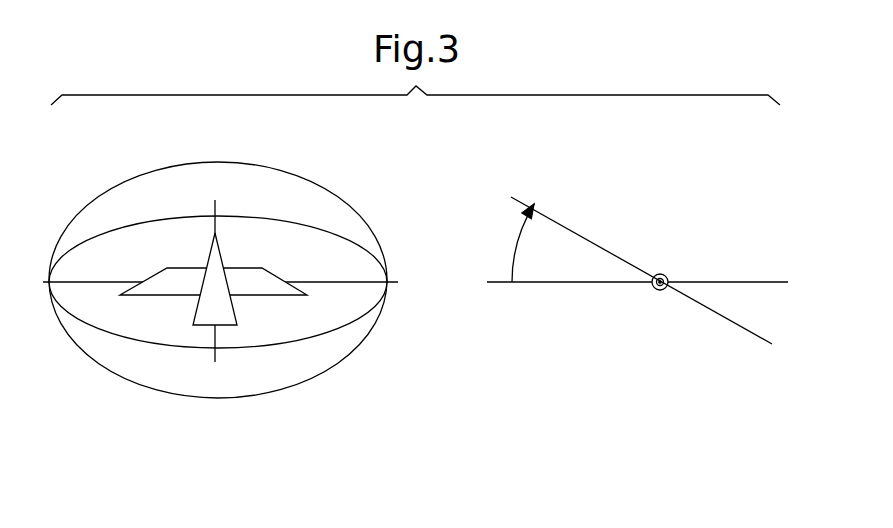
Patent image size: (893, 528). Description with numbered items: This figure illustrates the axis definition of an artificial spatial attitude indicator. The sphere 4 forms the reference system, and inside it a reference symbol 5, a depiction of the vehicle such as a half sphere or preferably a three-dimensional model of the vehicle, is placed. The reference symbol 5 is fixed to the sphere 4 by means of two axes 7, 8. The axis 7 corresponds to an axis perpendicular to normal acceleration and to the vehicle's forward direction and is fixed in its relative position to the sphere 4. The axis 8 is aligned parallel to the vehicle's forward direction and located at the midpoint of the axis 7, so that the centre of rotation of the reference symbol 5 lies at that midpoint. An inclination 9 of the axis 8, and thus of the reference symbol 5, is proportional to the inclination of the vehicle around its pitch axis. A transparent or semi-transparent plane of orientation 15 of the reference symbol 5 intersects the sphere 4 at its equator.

The sphere 4 is at (360, 348).
The reference symbol 5 is at (178, 273).
The axis 7 is at (392, 275).
The axis 8 is at (222, 357).
The inclination 9 is at (512, 237).
The plane of orientation 15 is at (243, 268).